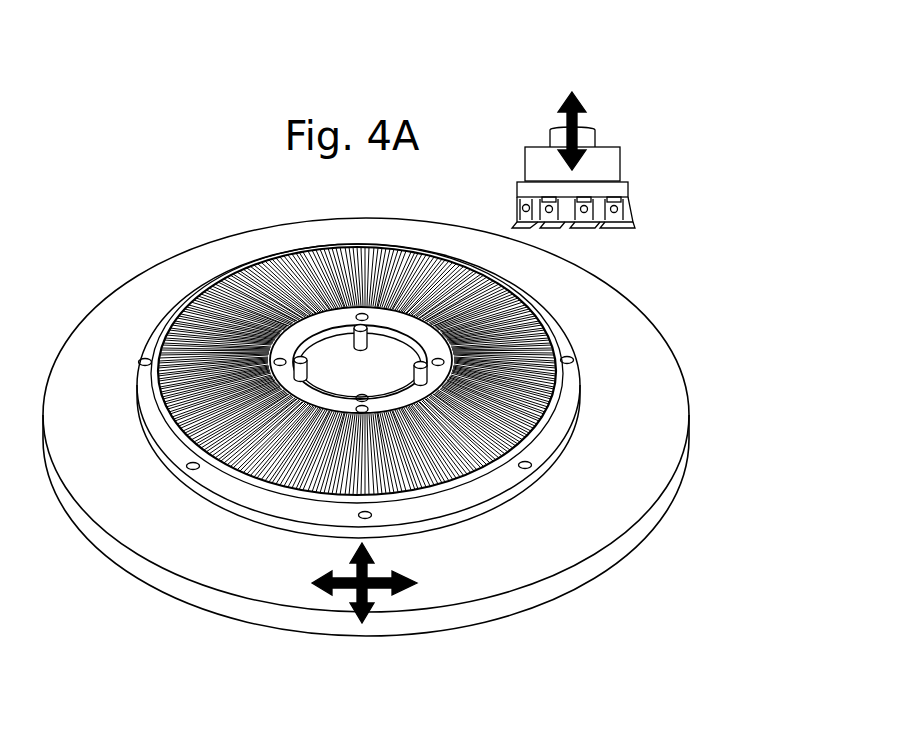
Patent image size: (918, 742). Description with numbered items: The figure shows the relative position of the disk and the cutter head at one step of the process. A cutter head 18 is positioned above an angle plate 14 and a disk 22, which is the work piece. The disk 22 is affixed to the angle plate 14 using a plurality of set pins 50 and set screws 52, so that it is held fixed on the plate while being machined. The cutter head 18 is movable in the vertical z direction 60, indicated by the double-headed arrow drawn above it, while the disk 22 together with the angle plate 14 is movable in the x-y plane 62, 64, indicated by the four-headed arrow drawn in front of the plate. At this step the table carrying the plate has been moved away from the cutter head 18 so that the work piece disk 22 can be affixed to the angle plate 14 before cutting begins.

The angle plate 14 is at (650, 413).
The cutter head 18 is at (607, 165).
The disk 22 is at (555, 333).
The set pins 50 is at (315, 363).
The set screws 52 is at (145, 357).
The z (vertical) direction 60 is at (582, 104).
The x-y plane direction 62 is at (417, 585).
The x-y plane direction 64 is at (348, 614).